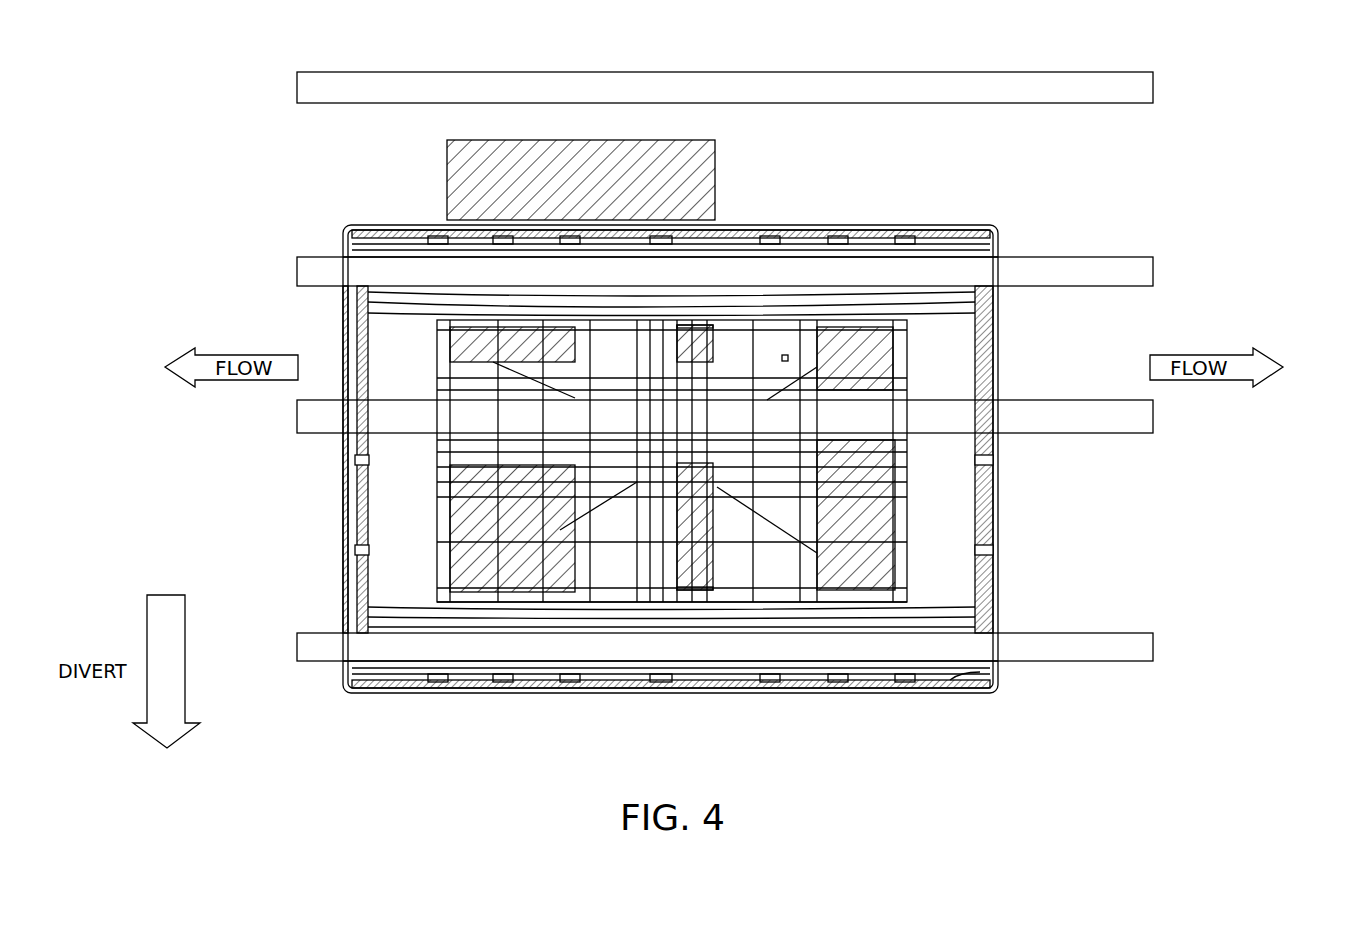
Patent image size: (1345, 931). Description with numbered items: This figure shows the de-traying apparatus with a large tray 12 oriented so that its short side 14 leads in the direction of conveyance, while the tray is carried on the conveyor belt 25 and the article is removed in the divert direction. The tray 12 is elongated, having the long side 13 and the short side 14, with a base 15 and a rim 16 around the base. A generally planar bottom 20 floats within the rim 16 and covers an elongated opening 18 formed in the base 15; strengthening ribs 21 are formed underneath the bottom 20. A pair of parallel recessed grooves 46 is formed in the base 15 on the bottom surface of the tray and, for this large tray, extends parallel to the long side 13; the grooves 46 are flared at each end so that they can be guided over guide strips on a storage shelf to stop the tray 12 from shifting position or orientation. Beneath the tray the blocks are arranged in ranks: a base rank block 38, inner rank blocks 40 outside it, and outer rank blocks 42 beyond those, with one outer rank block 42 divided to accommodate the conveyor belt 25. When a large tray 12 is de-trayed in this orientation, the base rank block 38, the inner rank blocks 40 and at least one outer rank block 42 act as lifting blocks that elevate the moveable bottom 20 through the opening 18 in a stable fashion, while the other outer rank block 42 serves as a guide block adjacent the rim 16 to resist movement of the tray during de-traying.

The tray 12 is at (1000, 222).
The long side 13 is at (780, 228).
The short side 14 is at (998, 352).
The base 15 is at (950, 460).
The rim 16 is at (985, 695).
The elongated opening 18 is at (915, 507).
The bottom 20 is at (785, 357).
The strengthening ribs 21 is at (632, 525).
The conveyor belt 25 is at (1135, 72).
The base rank block 38 is at (490, 605).
The inner rank blocks 40 is at (717, 340).
The outer rank blocks 42 is at (715, 165).
The grooves 46 is at (357, 305).